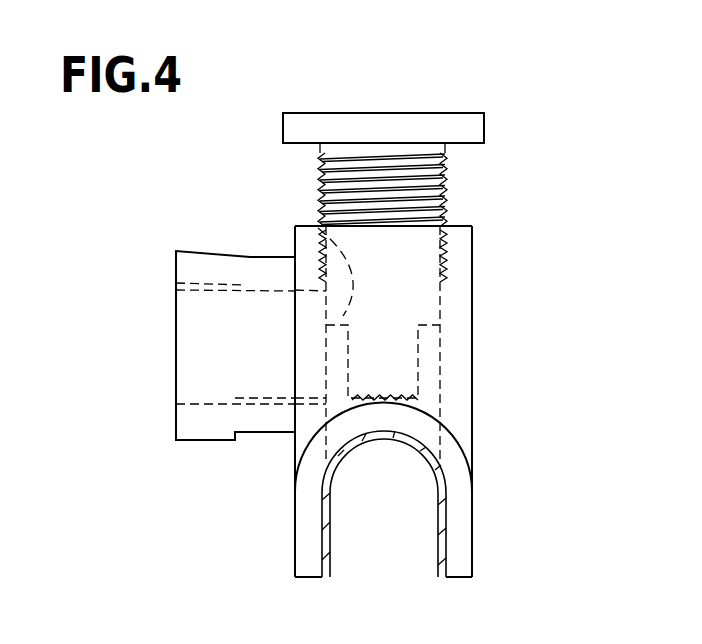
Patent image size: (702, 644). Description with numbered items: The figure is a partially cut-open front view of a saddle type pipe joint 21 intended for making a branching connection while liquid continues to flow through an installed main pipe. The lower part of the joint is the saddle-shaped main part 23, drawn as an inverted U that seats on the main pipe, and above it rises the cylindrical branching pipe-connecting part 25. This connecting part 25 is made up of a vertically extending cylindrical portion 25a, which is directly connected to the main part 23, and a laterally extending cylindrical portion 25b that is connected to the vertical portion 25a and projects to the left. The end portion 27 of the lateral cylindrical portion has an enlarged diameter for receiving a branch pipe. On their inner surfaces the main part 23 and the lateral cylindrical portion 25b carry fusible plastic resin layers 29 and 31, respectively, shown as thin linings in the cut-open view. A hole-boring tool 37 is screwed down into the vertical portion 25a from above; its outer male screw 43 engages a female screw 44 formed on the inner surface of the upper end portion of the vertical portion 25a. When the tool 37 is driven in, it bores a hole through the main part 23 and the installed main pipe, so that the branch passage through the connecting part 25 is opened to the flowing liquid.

The pipe joint 21 is at (499, 301).
The saddle-shaped main part 23 is at (460, 545).
The cylindrical branching pipe-connecting part 25 is at (215, 498).
The vertically extending cylindrical portion 25a is at (262, 470).
The laterally extending cylindrical portion 25b is at (228, 443).
The end portion 27 is at (228, 315).
The fusible plastic resin layer 29 is at (333, 515).
The fusible plastic resin layer 31 is at (196, 293).
The hole-boring tool 37 is at (403, 113).
The outer male screw 43 is at (447, 176).
The female screw 44 is at (297, 222).